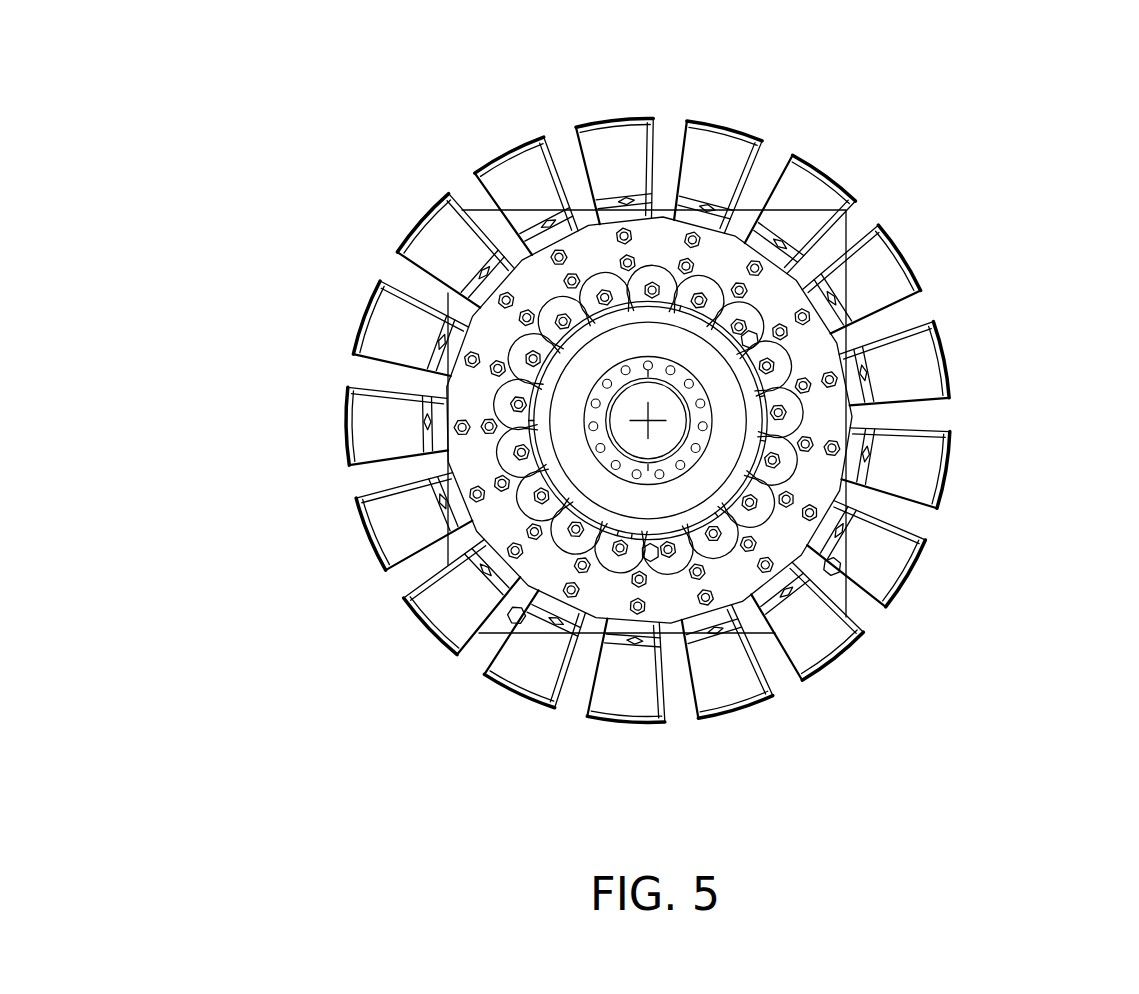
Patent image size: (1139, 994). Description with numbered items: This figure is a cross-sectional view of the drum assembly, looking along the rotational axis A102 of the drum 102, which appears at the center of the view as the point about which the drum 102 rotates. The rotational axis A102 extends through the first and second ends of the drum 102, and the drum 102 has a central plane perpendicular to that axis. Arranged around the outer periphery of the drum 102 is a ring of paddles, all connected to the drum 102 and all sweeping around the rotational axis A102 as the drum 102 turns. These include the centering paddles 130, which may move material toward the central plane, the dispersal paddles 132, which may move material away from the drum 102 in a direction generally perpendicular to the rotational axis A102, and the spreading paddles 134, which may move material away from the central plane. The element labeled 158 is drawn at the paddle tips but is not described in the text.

The drum 102 is at (737, 290).
The centering paddle 130 is at (947, 497).
The dispersal paddle 132 is at (612, 117).
The spreading paddle 134 is at (342, 435).
The blade tip cap 158 is at (645, 113).
The rotational axis A102 is at (648, 420).